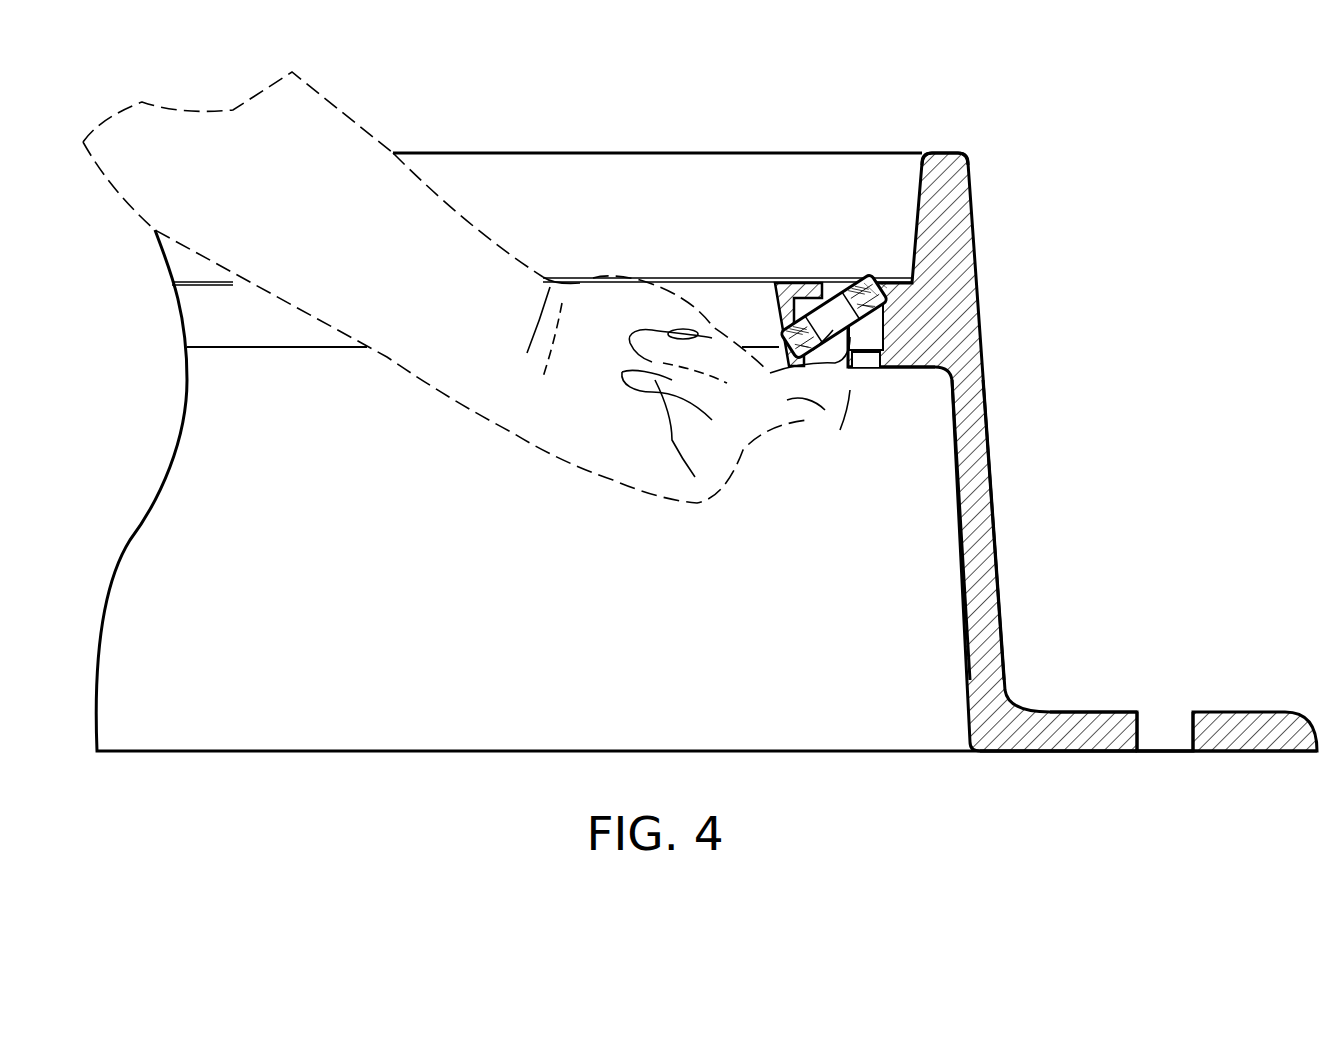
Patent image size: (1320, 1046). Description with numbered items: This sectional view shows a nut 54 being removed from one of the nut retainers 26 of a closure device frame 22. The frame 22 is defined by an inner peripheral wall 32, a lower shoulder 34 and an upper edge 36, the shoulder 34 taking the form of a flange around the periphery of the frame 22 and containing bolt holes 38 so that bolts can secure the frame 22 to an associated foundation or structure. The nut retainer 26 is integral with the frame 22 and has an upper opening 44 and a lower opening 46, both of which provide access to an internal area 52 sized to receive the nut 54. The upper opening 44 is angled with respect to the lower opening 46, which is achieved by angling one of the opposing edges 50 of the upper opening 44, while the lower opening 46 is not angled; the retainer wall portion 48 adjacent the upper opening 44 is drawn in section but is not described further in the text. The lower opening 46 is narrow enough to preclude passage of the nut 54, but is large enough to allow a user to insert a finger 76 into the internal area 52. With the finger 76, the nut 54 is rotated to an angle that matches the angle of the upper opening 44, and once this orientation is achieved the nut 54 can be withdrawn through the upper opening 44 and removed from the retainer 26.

The frame 22 is at (970, 351).
The nut retainer 26 is at (903, 367).
The inner peripheral wall 32 is at (963, 602).
The lower shoulder 34 is at (1072, 712).
The upper edge 36 is at (940, 153).
The bolt hole 38 is at (1171, 712).
The upper opening 44 is at (830, 287).
The lower opening 46 is at (863, 367).
The clamp block 48 is at (822, 282).
The opposing edge 50 is at (887, 283).
The internal area 52 is at (876, 313).
The nut 54 is at (843, 282).
The finger 76 is at (813, 410).